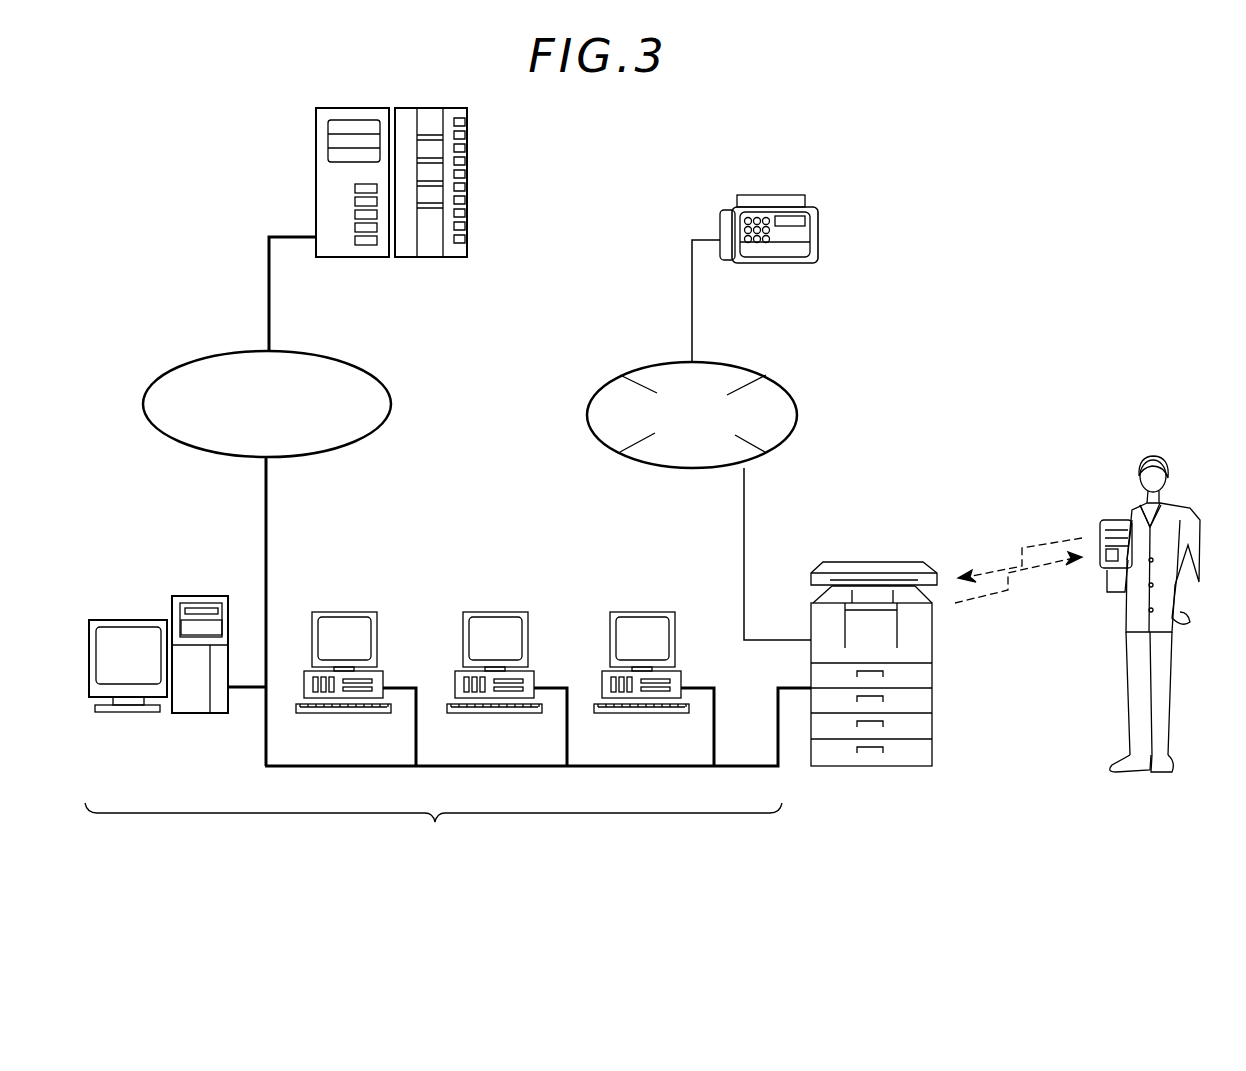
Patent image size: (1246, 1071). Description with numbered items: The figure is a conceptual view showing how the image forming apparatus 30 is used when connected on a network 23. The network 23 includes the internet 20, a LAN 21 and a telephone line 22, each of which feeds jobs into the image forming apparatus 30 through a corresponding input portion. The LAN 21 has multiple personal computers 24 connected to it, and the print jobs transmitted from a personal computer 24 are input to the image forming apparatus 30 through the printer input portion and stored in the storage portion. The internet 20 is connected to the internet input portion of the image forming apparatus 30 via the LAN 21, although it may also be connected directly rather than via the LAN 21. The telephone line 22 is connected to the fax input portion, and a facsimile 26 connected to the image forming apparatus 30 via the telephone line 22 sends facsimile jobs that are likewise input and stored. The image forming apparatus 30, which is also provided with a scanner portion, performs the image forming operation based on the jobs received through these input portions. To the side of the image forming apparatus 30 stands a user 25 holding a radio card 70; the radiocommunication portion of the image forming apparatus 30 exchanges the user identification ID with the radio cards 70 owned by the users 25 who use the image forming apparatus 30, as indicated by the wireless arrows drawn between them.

The internet 20 is at (191, 364).
The telephone line 22 is at (797, 392).
The facsimile 26 is at (818, 205).
The personal computer 24 is at (378, 622).
The LAN 21 is at (533, 768).
The network 23 is at (433, 833).
The image forming apparatus 30 is at (932, 752).
The user 25 is at (1167, 470).
The radio card 70 is at (1100, 519).